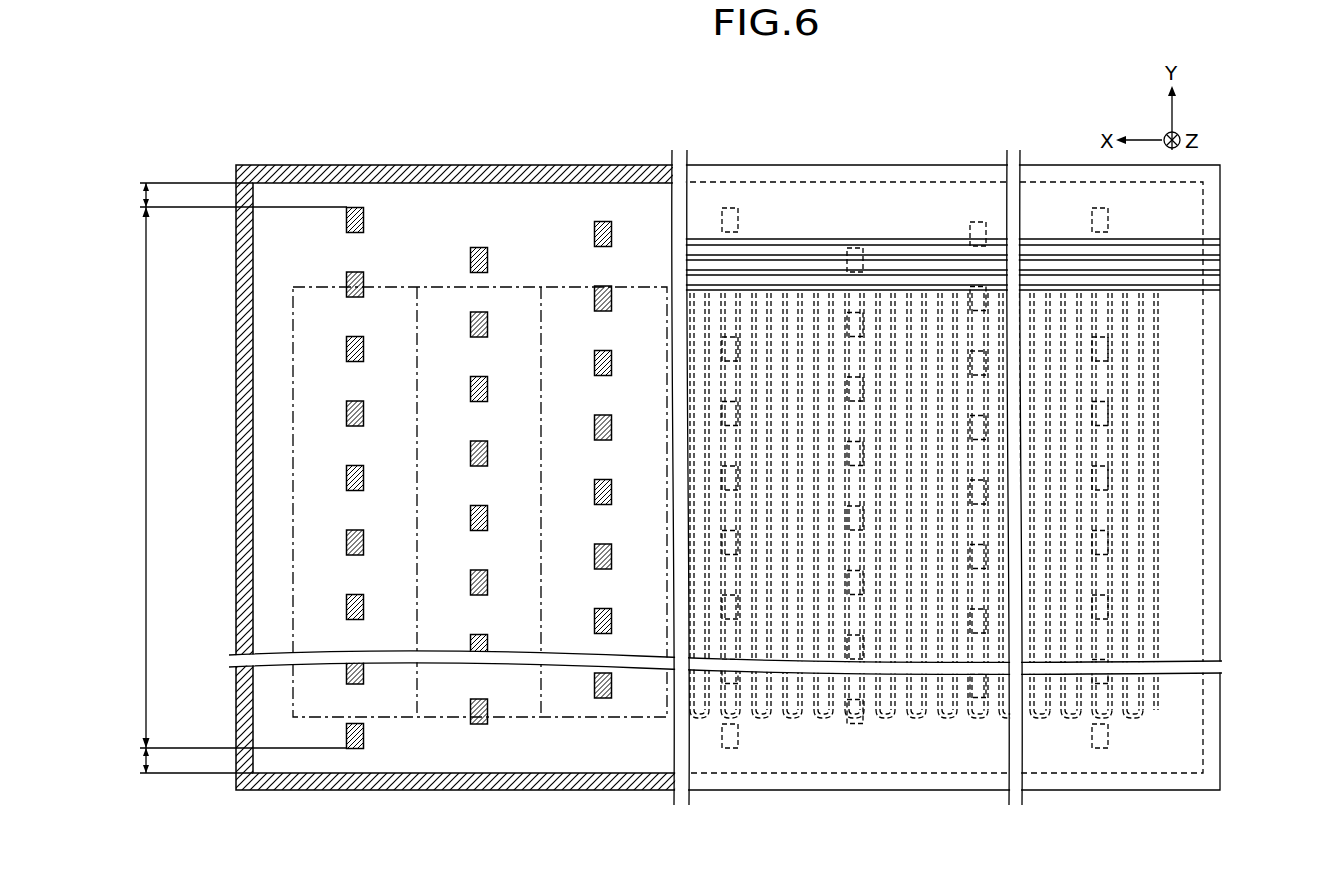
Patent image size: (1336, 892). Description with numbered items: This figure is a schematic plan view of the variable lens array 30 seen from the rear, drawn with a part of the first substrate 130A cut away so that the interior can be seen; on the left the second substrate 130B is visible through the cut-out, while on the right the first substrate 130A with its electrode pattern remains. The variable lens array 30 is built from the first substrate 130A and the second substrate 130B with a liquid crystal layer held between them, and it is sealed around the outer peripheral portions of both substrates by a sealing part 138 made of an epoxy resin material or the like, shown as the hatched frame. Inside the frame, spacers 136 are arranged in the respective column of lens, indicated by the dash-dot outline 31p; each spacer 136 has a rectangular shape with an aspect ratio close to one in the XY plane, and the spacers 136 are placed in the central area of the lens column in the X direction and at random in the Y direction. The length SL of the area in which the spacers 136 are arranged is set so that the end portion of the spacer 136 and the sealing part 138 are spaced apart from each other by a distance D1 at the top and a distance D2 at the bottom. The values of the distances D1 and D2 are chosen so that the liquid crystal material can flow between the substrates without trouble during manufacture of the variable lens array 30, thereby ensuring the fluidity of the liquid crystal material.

The sealing part 138 is at (263, 165).
The spacer 136 is at (354, 207).
The pixel region 31p is at (393, 287).
The second substrate 130B is at (236, 390).
The first substrate 130A is at (1188, 412).
The variable lens array 30 is at (745, 149).
The distance D1 is at (230, 195).
The distance D2 is at (230, 760).
The length SL is at (131, 477).